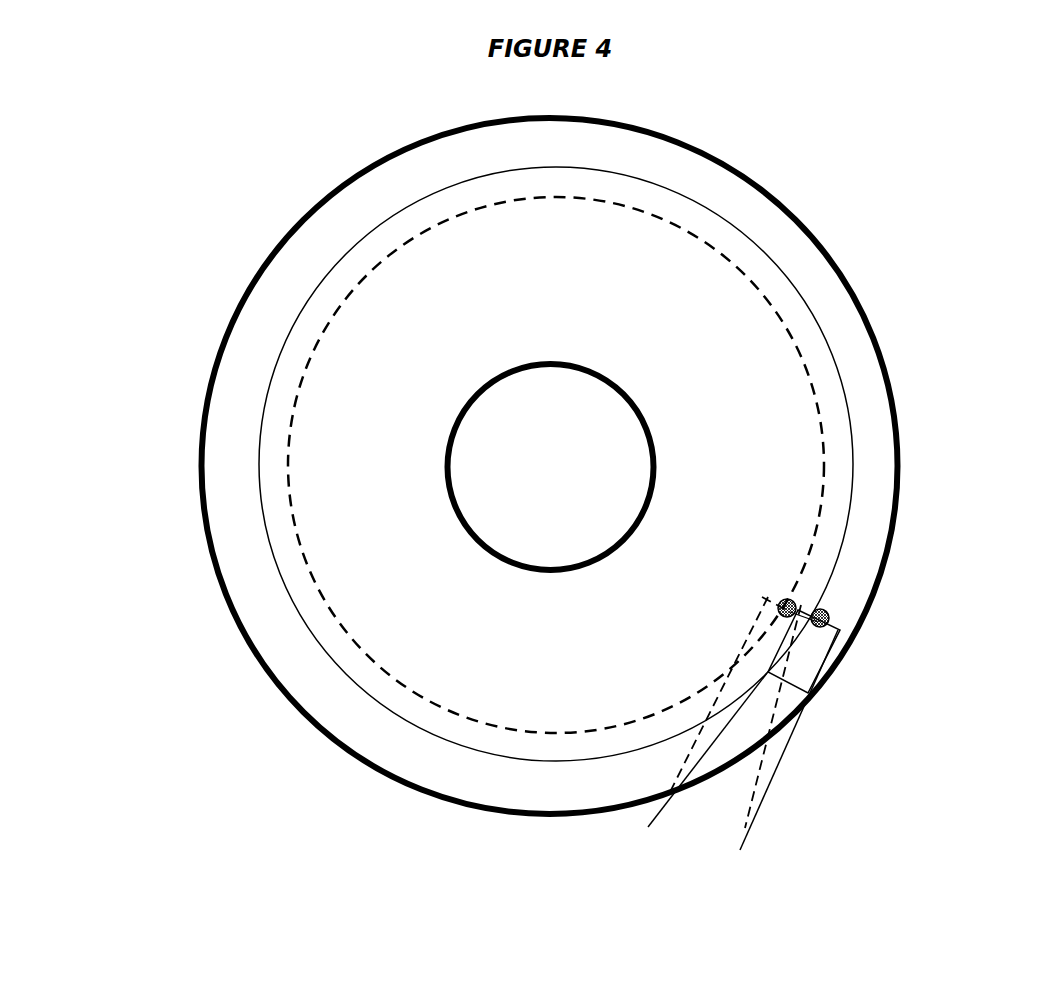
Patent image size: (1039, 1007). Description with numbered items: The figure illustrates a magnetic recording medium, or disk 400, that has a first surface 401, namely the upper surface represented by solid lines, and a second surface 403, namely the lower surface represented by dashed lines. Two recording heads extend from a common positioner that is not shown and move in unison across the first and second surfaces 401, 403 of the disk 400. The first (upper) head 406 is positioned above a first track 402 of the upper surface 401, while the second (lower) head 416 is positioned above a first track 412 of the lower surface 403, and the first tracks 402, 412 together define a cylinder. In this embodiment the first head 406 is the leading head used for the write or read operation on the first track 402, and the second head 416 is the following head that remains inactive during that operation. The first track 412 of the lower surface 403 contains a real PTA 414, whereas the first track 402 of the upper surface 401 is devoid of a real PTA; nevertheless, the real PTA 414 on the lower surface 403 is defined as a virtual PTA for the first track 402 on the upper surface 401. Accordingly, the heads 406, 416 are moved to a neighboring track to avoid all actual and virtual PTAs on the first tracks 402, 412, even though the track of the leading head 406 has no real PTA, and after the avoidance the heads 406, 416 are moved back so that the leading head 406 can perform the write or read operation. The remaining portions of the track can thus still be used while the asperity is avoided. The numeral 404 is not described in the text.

The magnetic recording medium (disk) 400 is at (766, 188).
The first surface 401 is at (338, 222).
The first track 402 is at (848, 412).
The second surface 403 is at (252, 308).
The first (upper) head 404 is at (830, 612).
The first (upper) head 406 is at (826, 660).
The first track 412 is at (827, 452).
The real PTA 414 is at (783, 598).
The second (lower) head 416 is at (755, 631).